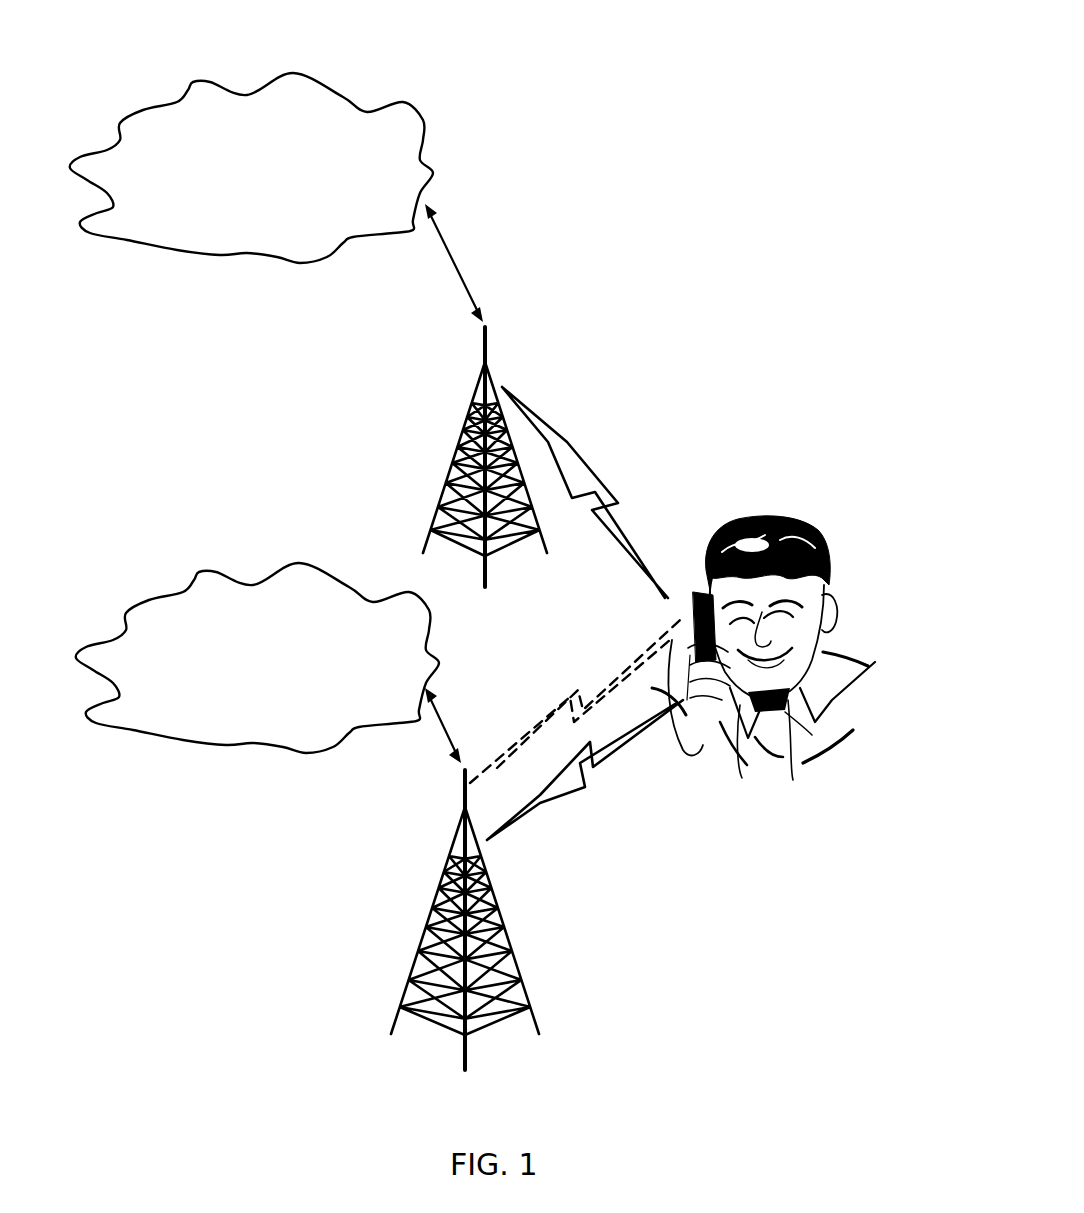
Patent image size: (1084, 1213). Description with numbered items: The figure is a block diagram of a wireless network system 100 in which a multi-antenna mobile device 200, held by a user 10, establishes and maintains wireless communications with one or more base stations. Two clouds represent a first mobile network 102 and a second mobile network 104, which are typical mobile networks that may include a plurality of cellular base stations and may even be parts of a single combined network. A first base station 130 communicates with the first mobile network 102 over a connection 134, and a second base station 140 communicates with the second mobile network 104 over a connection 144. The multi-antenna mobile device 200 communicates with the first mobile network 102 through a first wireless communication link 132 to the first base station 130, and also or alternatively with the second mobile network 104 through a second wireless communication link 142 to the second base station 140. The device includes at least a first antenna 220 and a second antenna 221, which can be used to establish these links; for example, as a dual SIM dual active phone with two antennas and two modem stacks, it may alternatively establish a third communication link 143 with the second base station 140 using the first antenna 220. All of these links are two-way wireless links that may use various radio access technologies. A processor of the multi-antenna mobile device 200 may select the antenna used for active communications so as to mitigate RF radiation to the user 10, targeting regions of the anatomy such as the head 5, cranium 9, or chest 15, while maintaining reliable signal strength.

The wireless network system 100 is at (754, 62).
The first mobile network 102 is at (345, 97).
The second mobile network 104 is at (200, 573).
The first base station 130 is at (458, 458).
The first wireless communication link 132 is at (597, 528).
The connection 134 is at (456, 265).
The second base station 140 is at (405, 998).
The second wireless communication link 142 is at (589, 766).
The third communication link 143 is at (572, 697).
The connection 144 is at (424, 740).
The first antenna 220 is at (700, 600).
The second antenna 221 is at (687, 700).
The multi-antenna mobile device 200 is at (785, 712).
The user 10 is at (822, 803).
The cranium 9 is at (782, 518).
The head 5 is at (826, 572).
The chest 15 is at (730, 740).